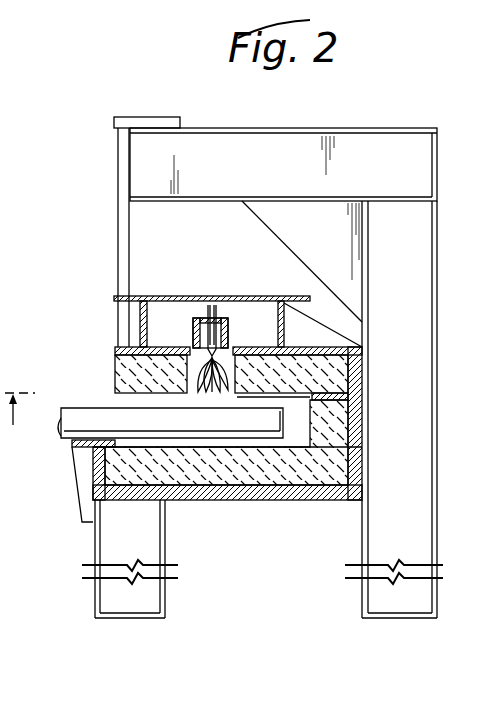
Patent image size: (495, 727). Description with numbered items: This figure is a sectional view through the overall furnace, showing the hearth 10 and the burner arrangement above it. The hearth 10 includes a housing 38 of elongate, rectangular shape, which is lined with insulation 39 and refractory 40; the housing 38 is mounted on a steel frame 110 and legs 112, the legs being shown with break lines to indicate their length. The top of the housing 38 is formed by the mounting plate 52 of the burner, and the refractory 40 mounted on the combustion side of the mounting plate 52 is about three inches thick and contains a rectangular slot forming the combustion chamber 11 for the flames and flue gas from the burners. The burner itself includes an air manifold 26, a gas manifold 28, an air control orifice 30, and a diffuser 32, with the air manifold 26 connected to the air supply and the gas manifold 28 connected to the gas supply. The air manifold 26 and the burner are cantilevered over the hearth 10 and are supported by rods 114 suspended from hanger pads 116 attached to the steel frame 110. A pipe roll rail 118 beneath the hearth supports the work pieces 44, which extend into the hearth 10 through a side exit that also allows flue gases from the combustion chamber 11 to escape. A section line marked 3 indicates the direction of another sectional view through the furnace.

The section view direction indicator 3 is at (19, 428).
The furnace hearth 10 is at (145, 402).
The combustion chamber 11 is at (211, 396).
The air manifold 26 is at (148, 296).
The gas manifold 28 is at (228, 331).
The air control orifice 30 is at (216, 340).
The diffuser 32 is at (209, 335).
The housing 38 is at (208, 505).
The insulation 39 is at (268, 500).
The refractory 40 is at (317, 468).
The work pieces 44 is at (73, 406).
The mounting plate 52 is at (163, 347).
The steel frame 110 is at (350, 145).
The legs 112 is at (153, 603).
The rods 114 is at (120, 218).
The hanger pads 116 is at (142, 120).
The pipe roll rail 118 is at (82, 452).